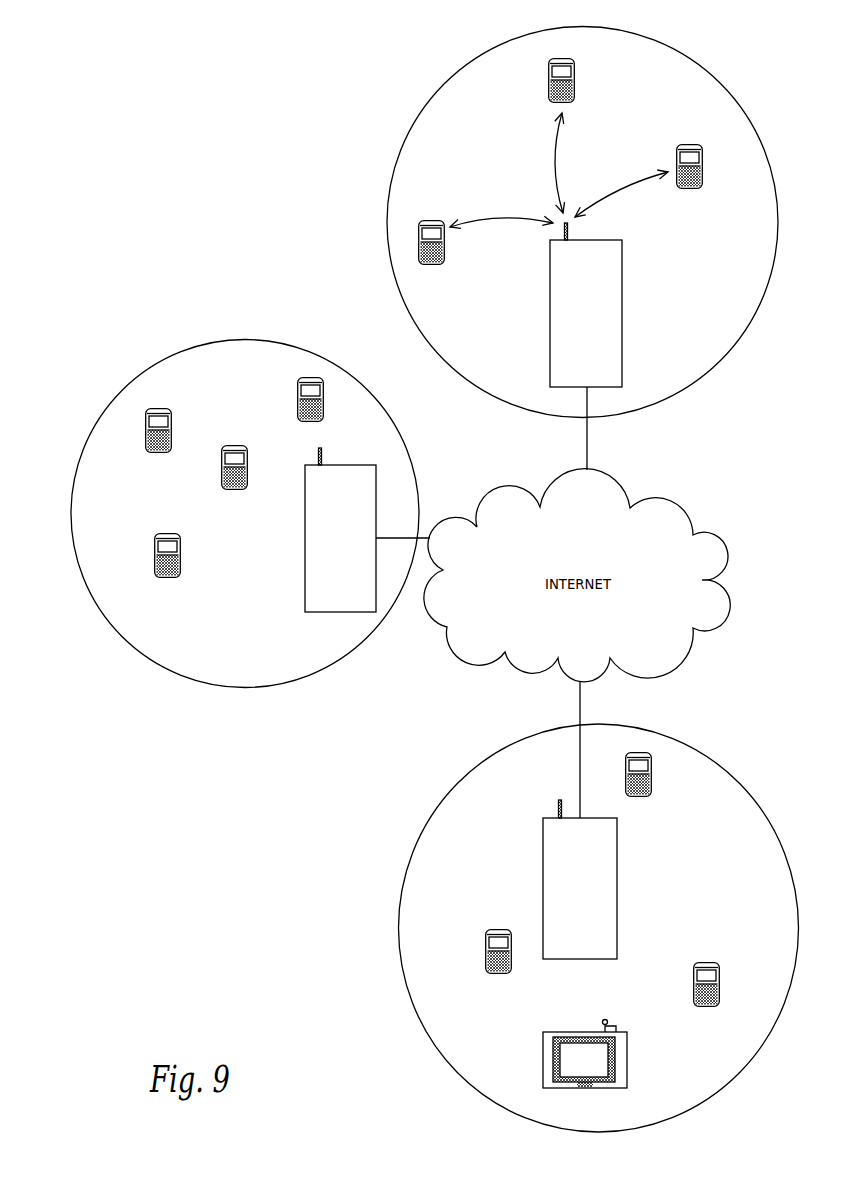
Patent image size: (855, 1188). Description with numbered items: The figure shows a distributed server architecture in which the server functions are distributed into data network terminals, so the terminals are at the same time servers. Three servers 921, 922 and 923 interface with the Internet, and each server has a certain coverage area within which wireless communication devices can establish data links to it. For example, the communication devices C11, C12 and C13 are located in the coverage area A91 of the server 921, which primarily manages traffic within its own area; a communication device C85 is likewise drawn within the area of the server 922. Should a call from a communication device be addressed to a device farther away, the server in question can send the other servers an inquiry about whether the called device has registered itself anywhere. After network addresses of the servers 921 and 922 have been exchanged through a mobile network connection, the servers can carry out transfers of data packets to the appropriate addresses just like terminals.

The coverage area A91 is at (418, 112).
The server 921 is at (622, 311).
The server 922 is at (305, 537).
The server 923 is at (617, 886).
The communication device C11 is at (700, 190).
The communication device C12 is at (569, 107).
The communication device C13 is at (440, 268).
The communication terminal C85 is at (175, 580).